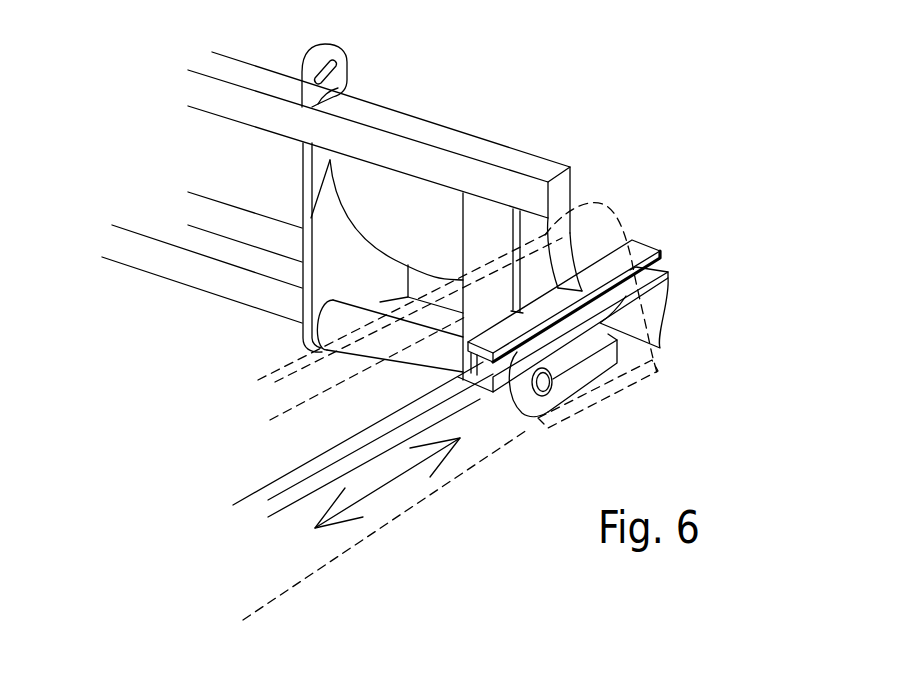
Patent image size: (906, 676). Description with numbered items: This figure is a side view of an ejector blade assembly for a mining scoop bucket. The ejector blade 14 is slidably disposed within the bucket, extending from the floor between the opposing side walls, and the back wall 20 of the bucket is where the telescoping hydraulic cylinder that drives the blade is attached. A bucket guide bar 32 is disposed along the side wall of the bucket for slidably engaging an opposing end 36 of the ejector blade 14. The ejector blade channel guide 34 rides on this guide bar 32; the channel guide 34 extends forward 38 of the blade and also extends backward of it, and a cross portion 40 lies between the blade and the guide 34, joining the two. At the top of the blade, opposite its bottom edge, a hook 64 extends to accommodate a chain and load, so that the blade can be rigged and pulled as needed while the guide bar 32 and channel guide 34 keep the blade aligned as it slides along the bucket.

The ejector blade 14 is at (470, 132).
The back wall 20 is at (243, 176).
The bucket guide bar 32 is at (453, 404).
The ejector blade channel guide 34 is at (666, 272).
The opposing end 36 is at (615, 335).
The forward direction 38 is at (608, 262).
The cross portion 40 is at (648, 310).
The hook 64 is at (338, 45).